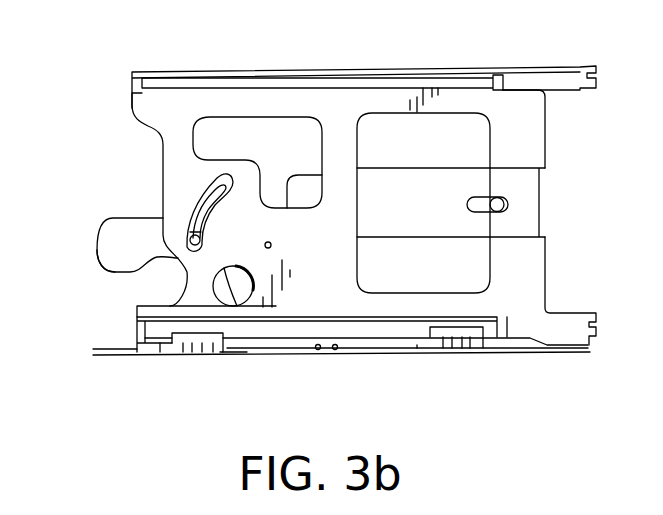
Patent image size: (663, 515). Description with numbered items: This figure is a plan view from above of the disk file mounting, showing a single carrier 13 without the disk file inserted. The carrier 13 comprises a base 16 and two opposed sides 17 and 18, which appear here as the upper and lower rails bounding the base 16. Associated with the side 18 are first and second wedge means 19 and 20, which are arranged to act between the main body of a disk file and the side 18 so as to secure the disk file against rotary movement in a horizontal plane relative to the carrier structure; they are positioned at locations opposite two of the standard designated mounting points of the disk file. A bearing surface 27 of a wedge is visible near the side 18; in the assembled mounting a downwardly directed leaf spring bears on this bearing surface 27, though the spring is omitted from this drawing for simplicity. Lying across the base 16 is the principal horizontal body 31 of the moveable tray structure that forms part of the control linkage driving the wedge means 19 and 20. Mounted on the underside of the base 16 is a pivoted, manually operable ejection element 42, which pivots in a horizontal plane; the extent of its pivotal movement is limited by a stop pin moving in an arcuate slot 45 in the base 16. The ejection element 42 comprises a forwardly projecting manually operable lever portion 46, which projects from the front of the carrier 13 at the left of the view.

The carrier 13 is at (158, 77).
The side 17 is at (370, 67).
The base 16 is at (527, 131).
The principal horizontal body 31 is at (530, 216).
The ejection element 42 is at (112, 235).
The lever portion 46 is at (103, 270).
The arcuate slot 45 is at (212, 210).
The first wedge means 19 is at (158, 360).
The bearing surface 27 is at (197, 352).
The side 18 is at (377, 350).
The second wedge means 20 is at (470, 360).